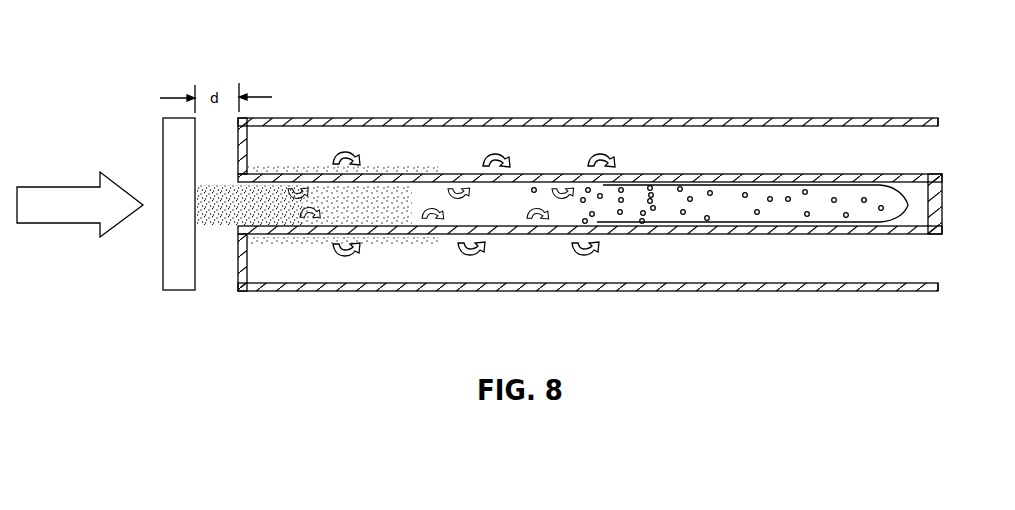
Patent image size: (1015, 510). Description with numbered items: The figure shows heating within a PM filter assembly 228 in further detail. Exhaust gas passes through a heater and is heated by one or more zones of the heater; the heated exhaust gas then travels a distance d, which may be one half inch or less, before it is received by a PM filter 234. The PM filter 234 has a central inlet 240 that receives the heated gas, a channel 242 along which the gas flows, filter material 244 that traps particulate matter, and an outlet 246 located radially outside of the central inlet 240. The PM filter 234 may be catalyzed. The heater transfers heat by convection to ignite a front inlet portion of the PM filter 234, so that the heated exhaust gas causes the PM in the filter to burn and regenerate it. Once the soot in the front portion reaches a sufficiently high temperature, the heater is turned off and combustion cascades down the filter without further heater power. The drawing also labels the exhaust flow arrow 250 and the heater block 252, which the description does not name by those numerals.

The PM filter assembly 228 is at (285, 67).
The PM filter 234 is at (457, 118).
The central inlet 240 is at (218, 233).
The channel 242 is at (700, 173).
The filter material 244 is at (655, 173).
The outlet 246 is at (938, 148).
The exhaust flow 250 is at (60, 224).
The heater 252 is at (180, 290).